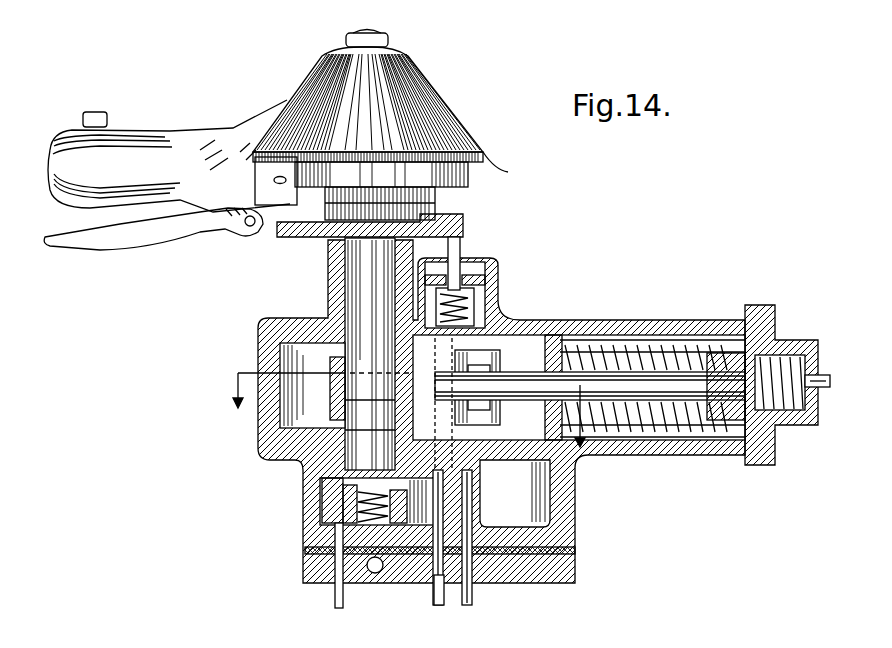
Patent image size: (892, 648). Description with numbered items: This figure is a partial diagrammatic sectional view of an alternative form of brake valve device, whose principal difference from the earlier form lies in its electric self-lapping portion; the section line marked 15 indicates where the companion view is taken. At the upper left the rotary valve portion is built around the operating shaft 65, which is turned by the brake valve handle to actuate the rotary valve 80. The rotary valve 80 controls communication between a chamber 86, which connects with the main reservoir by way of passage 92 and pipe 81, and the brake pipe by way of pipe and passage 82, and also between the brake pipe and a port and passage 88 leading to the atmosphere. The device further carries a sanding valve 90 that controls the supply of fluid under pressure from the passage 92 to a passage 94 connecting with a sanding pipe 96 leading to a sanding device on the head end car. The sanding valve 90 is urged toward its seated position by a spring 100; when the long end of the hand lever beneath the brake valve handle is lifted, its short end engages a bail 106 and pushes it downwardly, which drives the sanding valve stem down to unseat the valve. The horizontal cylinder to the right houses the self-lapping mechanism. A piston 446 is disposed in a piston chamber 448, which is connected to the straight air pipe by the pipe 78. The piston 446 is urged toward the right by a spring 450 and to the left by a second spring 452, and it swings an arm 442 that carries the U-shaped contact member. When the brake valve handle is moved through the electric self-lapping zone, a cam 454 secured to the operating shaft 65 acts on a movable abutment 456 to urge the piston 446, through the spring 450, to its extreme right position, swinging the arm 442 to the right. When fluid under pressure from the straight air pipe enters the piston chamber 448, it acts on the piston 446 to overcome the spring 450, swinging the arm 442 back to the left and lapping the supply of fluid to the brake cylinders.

The operating shaft 65 is at (360, 280).
The pipe 78 is at (822, 388).
The rotary valve 80 is at (330, 533).
The pipe 81 is at (437, 602).
The pipe and passage 82 is at (339, 602).
The chamber 86 is at (322, 487).
The port and passage 88 is at (378, 566).
The sanding valve 90 is at (480, 278).
The passage 92 is at (433, 473).
The passage 94 is at (467, 515).
The sanding pipe 96 is at (470, 600).
The spring 100 is at (422, 302).
The bail 106 is at (455, 236).
The arm 442 is at (483, 420).
The piston 446 is at (738, 333).
The piston chamber 448 is at (675, 345).
The spring 450 is at (600, 345).
The second spring 452 is at (772, 358).
The cam 454 is at (330, 368).
The movable abutment 456 is at (553, 345).
The section line 15 is at (414, 413).